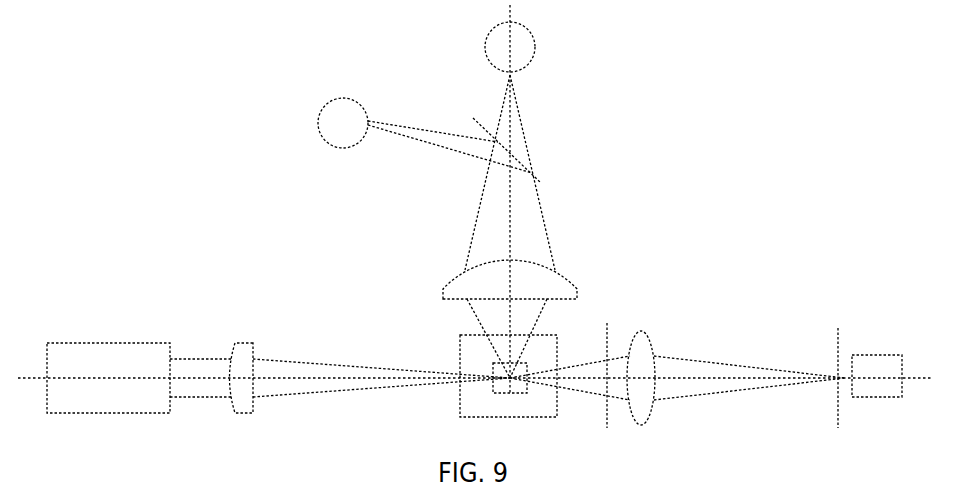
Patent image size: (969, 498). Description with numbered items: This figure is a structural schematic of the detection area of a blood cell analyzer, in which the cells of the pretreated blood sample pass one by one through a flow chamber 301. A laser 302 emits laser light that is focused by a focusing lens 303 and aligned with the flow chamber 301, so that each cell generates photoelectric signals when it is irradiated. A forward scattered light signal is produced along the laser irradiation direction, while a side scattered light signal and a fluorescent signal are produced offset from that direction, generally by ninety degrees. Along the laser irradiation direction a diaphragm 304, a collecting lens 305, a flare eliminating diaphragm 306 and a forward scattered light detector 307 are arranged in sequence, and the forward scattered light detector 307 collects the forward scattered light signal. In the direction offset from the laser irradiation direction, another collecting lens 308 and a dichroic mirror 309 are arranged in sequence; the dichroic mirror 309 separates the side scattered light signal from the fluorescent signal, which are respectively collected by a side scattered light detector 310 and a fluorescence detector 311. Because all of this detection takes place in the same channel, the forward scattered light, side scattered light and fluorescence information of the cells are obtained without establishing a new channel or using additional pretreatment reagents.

The flow chamber 301 is at (460, 345).
The laser 302 is at (135, 343).
The focusing lens 303 is at (243, 343).
The diaphragm 304 is at (607, 330).
The collecting lens 305 is at (648, 340).
The flare eliminating diaphragm 306 is at (838, 343).
The forward scattered light detector 307 is at (877, 355).
The collecting lens 308 is at (463, 272).
The dichroic mirror 309 is at (540, 182).
The side scattered light detector 310 is at (327, 143).
The fluorescence detector 311 is at (488, 54).